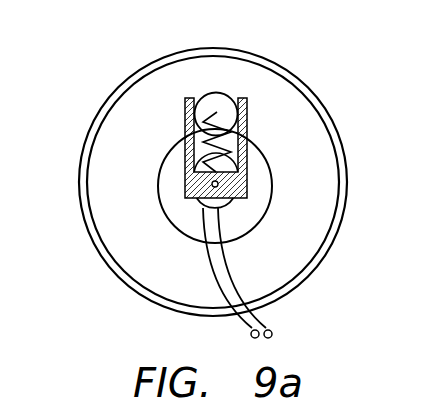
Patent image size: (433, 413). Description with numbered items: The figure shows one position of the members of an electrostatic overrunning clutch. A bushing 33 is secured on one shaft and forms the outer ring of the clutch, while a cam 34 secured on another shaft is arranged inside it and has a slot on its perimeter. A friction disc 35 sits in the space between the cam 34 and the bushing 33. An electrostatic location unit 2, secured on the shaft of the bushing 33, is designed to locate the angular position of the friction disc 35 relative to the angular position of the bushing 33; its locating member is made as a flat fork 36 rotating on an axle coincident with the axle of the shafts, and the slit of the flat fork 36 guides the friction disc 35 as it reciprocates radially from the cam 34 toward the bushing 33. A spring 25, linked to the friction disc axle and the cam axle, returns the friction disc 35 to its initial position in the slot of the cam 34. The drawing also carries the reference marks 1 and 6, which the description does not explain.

The tilt sensor 1 is at (225, 207).
The electrostatic location unit 2 is at (173, 97).
The lead wires with terminals 6 is at (248, 276).
The spring 25 is at (190, 133).
The bushing 33 is at (120, 91).
The cam 34 is at (183, 218).
The friction disc 35 is at (220, 104).
The flat fork 36 is at (196, 148).